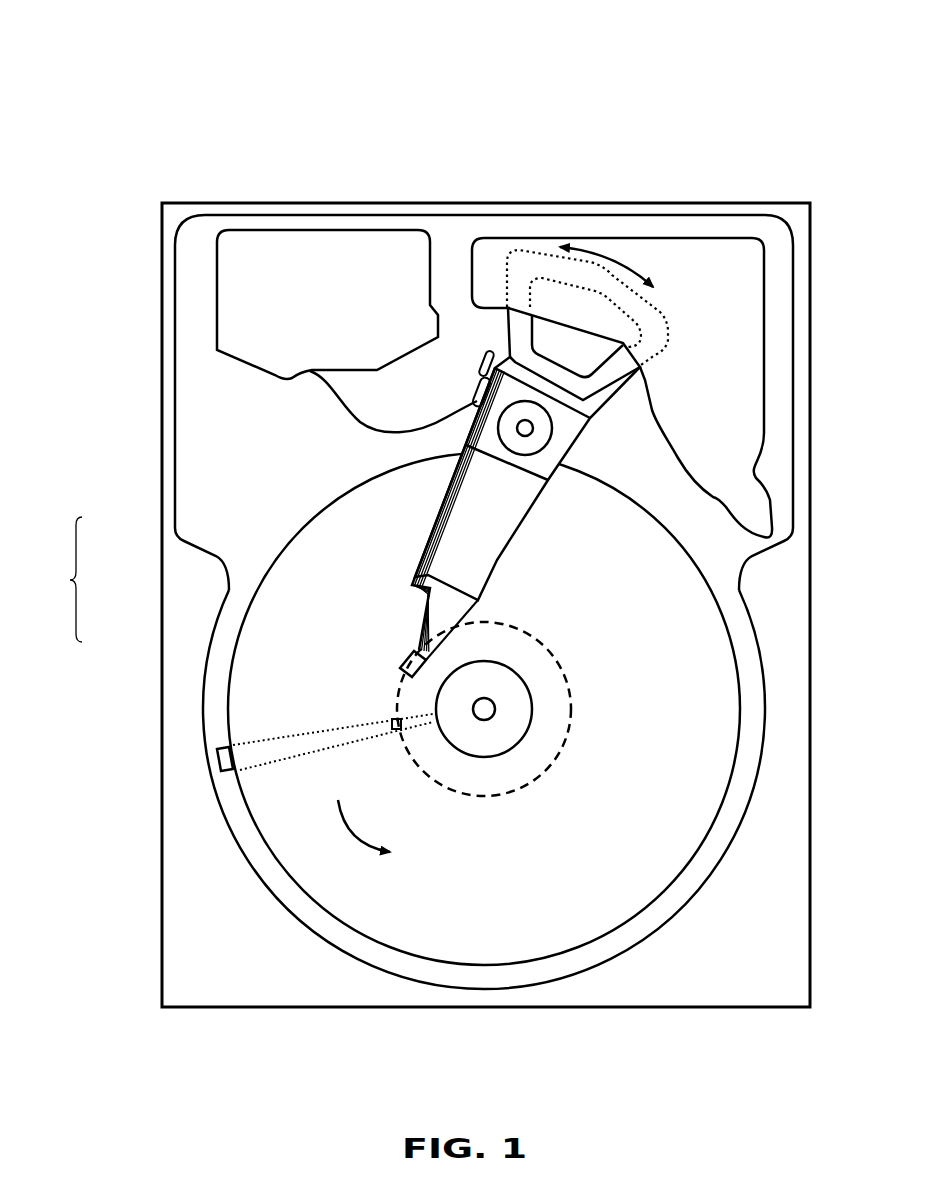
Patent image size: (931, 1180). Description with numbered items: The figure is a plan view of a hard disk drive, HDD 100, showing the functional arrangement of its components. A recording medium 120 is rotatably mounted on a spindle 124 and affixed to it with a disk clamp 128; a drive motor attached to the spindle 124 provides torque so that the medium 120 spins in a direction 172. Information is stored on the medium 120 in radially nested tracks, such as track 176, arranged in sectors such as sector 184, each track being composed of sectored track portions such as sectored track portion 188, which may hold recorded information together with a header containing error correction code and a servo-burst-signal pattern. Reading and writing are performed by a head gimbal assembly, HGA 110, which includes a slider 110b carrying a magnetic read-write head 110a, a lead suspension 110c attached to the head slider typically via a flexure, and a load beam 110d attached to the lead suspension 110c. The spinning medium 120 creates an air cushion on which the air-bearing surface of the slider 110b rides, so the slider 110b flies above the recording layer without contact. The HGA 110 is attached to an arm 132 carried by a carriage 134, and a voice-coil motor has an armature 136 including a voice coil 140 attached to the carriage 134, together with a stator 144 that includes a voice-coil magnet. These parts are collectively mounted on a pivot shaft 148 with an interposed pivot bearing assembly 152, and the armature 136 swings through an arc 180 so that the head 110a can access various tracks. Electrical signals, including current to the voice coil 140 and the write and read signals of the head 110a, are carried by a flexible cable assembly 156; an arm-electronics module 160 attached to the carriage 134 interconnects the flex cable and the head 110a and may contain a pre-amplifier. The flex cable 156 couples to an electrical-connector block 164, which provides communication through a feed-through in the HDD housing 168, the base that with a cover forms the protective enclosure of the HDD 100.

The hard disk drive 100 is at (88, 80).
The head gimbal assembly 110 is at (52, 579).
The magnetic read-write head 110a is at (403, 677).
The slider 110b is at (403, 652).
The lead suspension 110c is at (422, 613).
The load beam 110d is at (410, 578).
The recording medium 120 is at (670, 660).
The spindle 124 is at (487, 710).
The disk clamp 128 is at (513, 727).
The arm 132 is at (477, 543).
The carriage 134 is at (545, 462).
The armature 136 is at (500, 343).
The voice coil 140 is at (520, 317).
The stator 144 is at (737, 328).
The pivot shaft 148 is at (527, 428).
The pivot bearing assembly 152 is at (540, 440).
The flexible cable assembly 156 is at (333, 402).
The arm-electronics module 160 is at (480, 390).
The electrical-connector block 164 is at (240, 302).
The HDD housing 168 is at (790, 213).
The direction 172 is at (378, 830).
The track 176 is at (560, 668).
The arc 180 is at (607, 255).
The sector 184 is at (218, 755).
The sectored track portion 188 is at (395, 720).